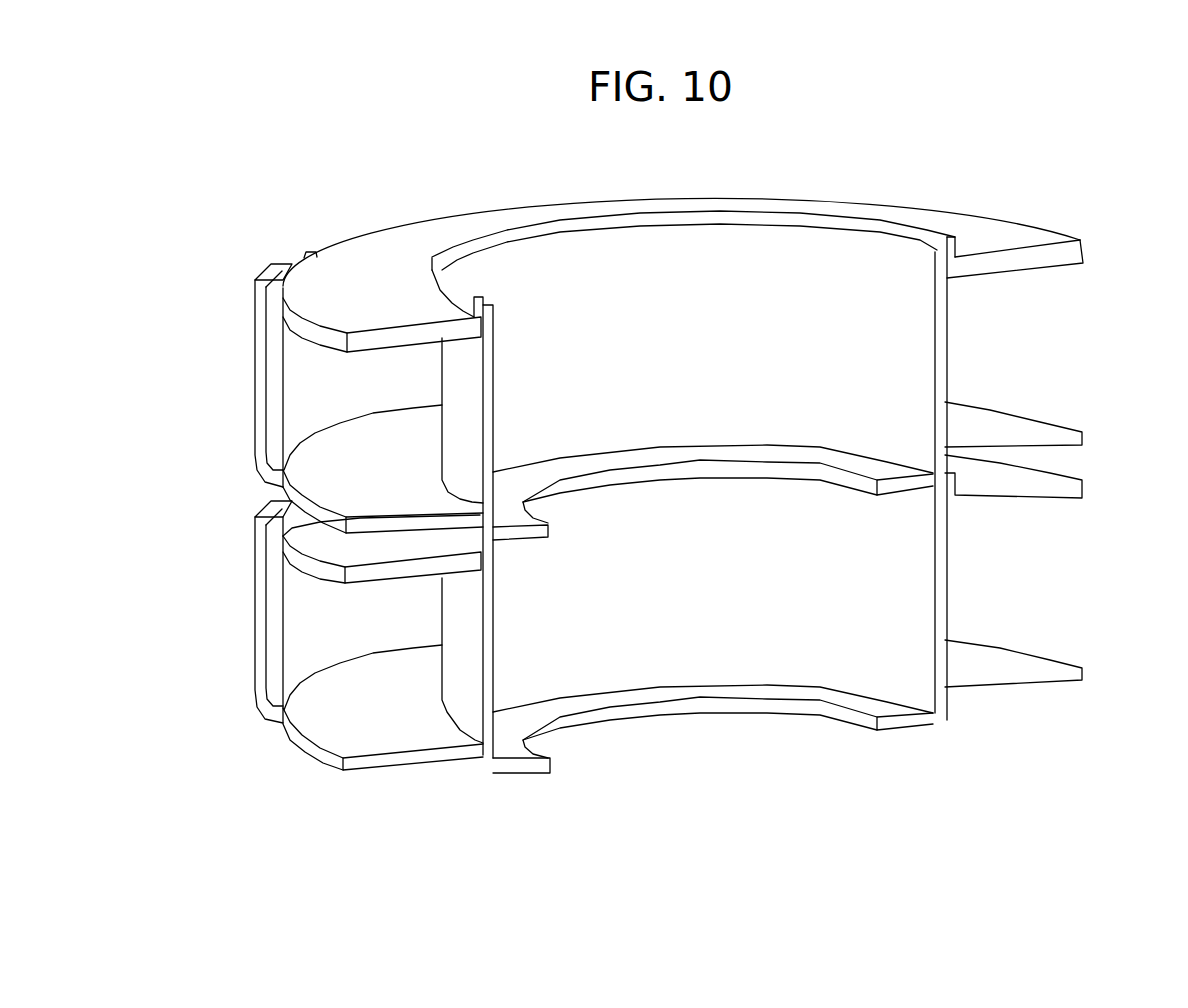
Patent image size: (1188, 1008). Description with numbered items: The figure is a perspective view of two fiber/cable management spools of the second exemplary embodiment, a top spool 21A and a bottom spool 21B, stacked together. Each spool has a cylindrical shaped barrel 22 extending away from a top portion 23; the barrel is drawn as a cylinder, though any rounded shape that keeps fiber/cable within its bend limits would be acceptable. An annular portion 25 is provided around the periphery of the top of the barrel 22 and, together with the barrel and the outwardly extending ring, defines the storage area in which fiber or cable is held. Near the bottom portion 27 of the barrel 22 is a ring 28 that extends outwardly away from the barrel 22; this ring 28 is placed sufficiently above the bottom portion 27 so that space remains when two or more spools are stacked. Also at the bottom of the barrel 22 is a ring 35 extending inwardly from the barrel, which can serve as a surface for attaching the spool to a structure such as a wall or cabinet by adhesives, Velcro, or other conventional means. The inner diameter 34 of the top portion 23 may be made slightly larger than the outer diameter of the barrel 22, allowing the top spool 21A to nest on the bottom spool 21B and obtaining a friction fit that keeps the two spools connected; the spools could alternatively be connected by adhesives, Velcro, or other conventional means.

The top spool 21A is at (245, 388).
The bottom spool 21B is at (245, 595).
The barrel 22 is at (668, 352).
The top portion 23 is at (1073, 235).
The annular portion 25 is at (1003, 240).
The bottom portion 27 is at (947, 720).
The ring 28 is at (1023, 660).
The inner diameter 34 is at (913, 237).
The ring 35 is at (520, 768).